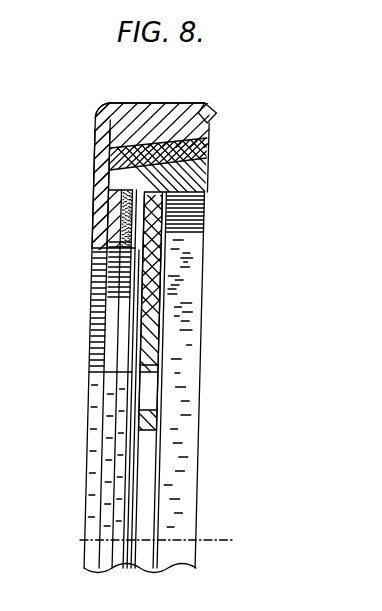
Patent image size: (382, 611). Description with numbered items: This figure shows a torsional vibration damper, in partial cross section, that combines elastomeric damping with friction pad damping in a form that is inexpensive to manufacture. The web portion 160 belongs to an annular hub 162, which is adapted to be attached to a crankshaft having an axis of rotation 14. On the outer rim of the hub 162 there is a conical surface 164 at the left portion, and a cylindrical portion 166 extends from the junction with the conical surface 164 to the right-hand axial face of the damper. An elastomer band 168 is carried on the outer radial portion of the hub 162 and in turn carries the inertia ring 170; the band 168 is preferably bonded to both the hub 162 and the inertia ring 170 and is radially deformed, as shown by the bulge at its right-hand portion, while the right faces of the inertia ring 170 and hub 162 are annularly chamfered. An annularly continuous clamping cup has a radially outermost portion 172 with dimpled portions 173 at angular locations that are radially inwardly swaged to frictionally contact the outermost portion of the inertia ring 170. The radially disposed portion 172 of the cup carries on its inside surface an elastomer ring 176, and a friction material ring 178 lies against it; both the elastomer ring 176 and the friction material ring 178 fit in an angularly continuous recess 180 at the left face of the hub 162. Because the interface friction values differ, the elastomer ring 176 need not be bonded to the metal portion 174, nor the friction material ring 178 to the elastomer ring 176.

The axis of rotation 14 is at (212, 540).
The web portion 160 is at (166, 333).
The annular hub 162 is at (204, 214).
The conical surface 164 is at (110, 173).
The cylindrical portion 166 is at (204, 187).
The elastomer band 168 is at (192, 166).
The inertia ring 170 is at (172, 130).
The radially outermost portion of clamping cup 172 is at (148, 103).
The dimpled portions 173 is at (216, 110).
The metal portion 174 is at (100, 222).
The elastomer ring 176 is at (104, 236).
The friction material ring 178 is at (118, 203).
The recess 180 is at (188, 238).